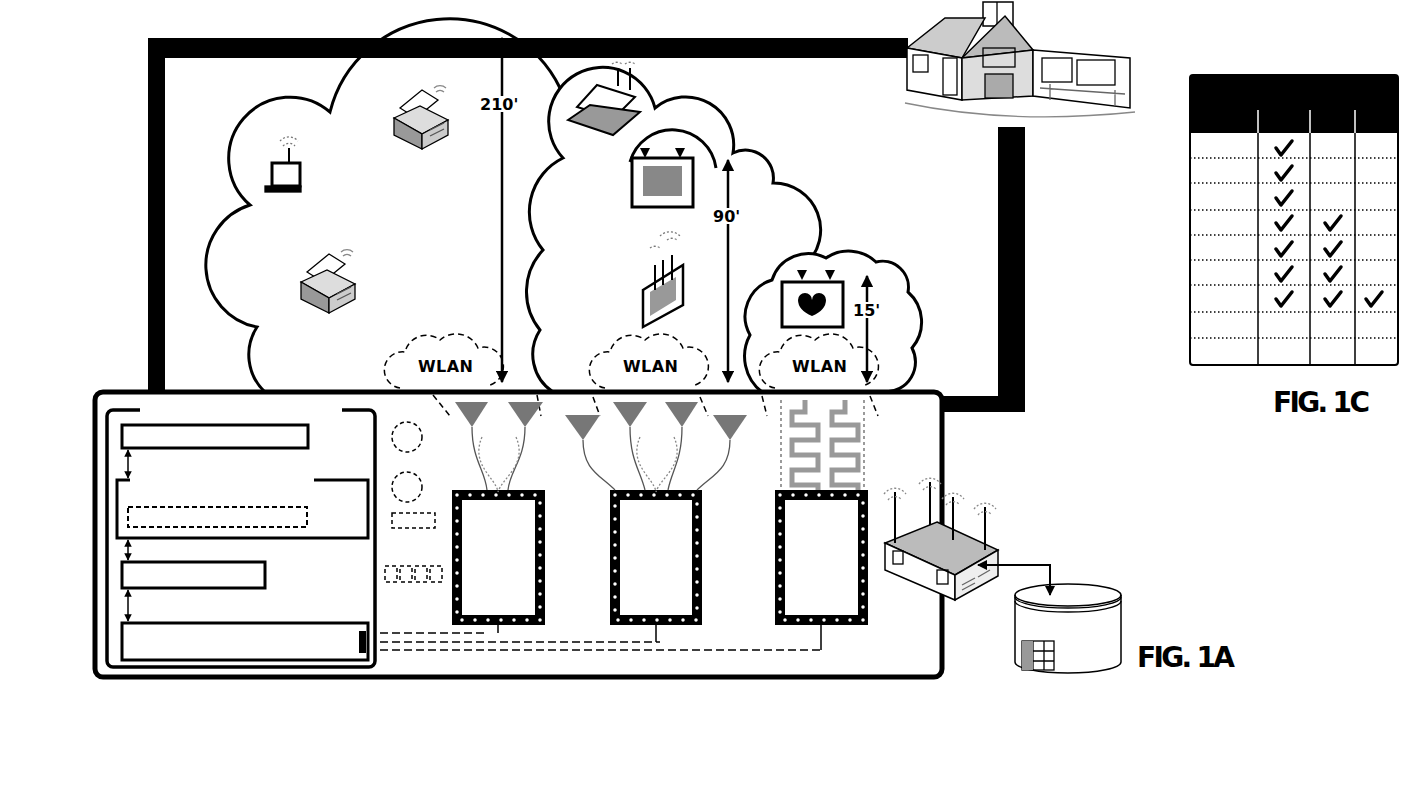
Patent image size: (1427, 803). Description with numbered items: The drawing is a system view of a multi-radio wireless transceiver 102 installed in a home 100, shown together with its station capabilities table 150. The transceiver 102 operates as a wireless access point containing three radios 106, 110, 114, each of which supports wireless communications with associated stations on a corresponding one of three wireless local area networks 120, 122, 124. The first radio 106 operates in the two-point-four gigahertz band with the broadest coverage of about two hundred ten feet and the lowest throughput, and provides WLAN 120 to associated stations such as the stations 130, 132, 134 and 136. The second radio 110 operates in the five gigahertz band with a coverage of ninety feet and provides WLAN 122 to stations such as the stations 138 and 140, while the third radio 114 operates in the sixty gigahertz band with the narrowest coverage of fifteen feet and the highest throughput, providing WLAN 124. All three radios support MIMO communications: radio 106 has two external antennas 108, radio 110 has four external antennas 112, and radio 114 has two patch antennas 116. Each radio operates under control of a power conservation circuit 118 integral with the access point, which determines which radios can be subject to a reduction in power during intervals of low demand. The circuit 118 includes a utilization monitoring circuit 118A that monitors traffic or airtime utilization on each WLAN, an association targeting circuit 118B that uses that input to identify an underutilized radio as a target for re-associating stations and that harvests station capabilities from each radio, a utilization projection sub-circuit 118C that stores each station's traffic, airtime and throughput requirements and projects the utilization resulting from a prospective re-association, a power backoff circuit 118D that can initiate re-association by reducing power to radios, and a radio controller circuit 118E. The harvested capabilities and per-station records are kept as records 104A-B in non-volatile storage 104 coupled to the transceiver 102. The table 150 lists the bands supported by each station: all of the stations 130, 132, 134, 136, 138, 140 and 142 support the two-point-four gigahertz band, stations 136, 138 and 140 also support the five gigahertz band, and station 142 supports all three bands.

In FIG. 1A, the home 100 is at (1022, 40).
In FIG. 1A, the multi-radio wireless transceiver 102 is at (1000, 556).
In FIG. 1A, the non-volatile storage 104 is at (1077, 596).
In FIG. 1A, the records 104A-B is at (1067, 643).
In FIG. 1A, the radio 106 is at (546, 521).
In FIG. 1A, the external antennas 108 is at (499, 447).
In FIG. 1A, the radio 110 is at (611, 597).
In FIG. 1A, the external antennas 112 is at (656, 447).
In FIG. 1A, the radio 114 is at (777, 604).
In FIG. 1A, the patch antennas 116 is at (866, 446).
In FIG. 1A, the power conservation circuit 118 is at (378, 418).
In FIG. 1A, the utilization monitoring circuit 118A is at (309, 428).
In FIG. 1A, the association targeting circuit 118B is at (312, 540).
In FIG. 1A, the utilization projection sub-circuit 118C is at (307, 513).
In FIG. 1A, the power backoff circuit 118D is at (266, 572).
In FIG. 1A, the radio controller circuit 118E is at (292, 627).
In FIG. 1A, the wireless local area network 120 is at (698, 106).
In FIG. 1A, the wireless local area network 122 is at (806, 200).
In FIG. 1A, the wireless local area network 124 is at (912, 290).
In FIG. 1A, the station 130 is at (348, 264).
In FIG. 1A, the station 132 is at (304, 180).
In FIG. 1A, the station 134 is at (382, 100).
In FIG. 1A, the station 136 is at (598, 108).
In FIG. 1A, the station 138 is at (632, 186).
In FIG. 1A, the station 140 is at (640, 292).
In FIG. 1A, the station 142 is at (855, 276).
In FIG. 1C, the station capabilities table 150 is at (1300, 75).